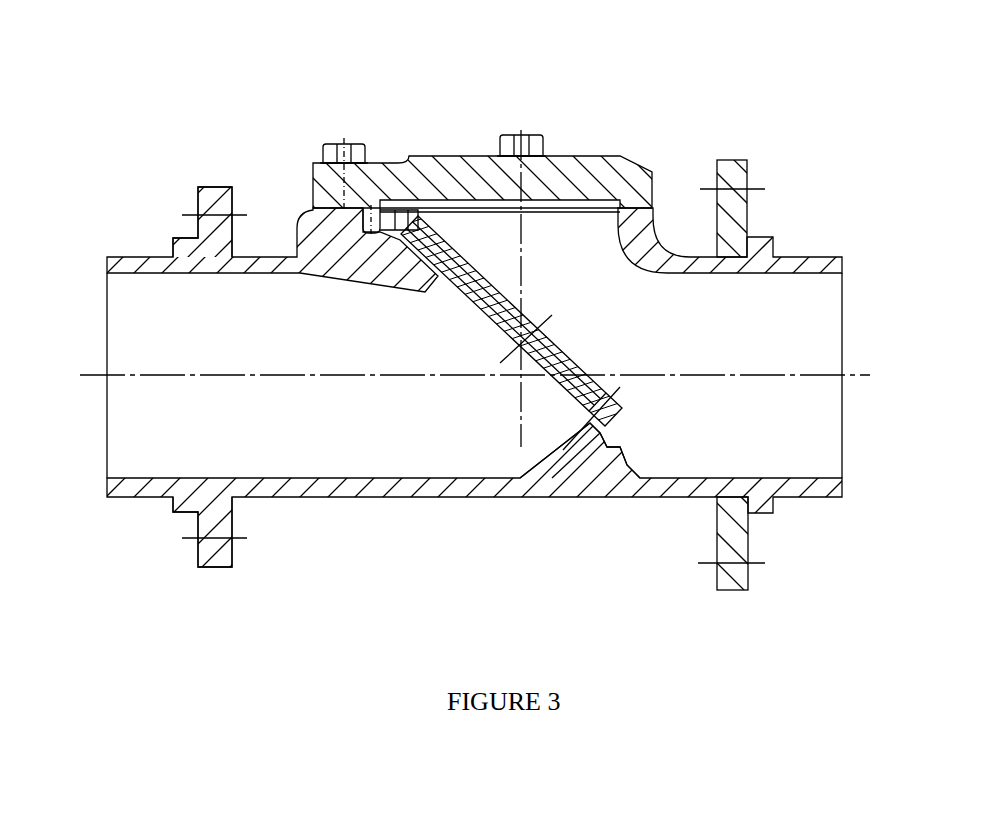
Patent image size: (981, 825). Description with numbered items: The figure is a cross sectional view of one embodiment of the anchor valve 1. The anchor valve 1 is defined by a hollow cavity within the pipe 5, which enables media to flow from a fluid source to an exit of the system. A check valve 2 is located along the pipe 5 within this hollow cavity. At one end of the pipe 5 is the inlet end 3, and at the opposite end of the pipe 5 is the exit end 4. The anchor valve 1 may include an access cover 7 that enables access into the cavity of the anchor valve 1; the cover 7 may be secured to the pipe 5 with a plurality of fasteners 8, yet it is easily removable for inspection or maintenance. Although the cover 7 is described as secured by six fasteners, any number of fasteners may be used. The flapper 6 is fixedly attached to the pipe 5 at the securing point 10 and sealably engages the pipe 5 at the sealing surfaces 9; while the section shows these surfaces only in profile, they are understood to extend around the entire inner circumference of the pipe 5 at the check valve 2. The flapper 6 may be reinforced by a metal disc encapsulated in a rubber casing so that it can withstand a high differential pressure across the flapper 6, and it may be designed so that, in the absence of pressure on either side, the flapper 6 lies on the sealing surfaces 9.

The anchor valve 1 is at (542, 38).
The check valve 2 is at (594, 330).
The inlet end 3 is at (167, 170).
The exit end 4 is at (772, 170).
The pipe 5 is at (437, 513).
The flapper 6 is at (620, 437).
The access cover 7 is at (646, 160).
The fasteners 8 is at (329, 142).
The sealing surfaces 9 is at (451, 280).
The securing point 10 is at (369, 236).